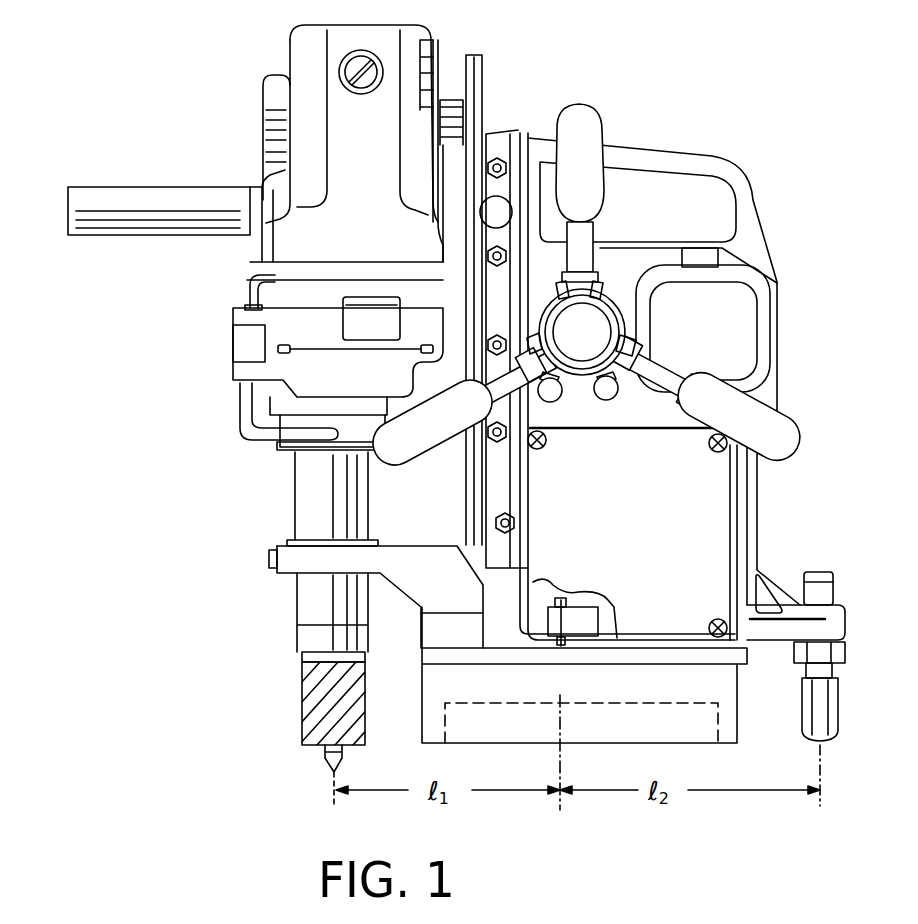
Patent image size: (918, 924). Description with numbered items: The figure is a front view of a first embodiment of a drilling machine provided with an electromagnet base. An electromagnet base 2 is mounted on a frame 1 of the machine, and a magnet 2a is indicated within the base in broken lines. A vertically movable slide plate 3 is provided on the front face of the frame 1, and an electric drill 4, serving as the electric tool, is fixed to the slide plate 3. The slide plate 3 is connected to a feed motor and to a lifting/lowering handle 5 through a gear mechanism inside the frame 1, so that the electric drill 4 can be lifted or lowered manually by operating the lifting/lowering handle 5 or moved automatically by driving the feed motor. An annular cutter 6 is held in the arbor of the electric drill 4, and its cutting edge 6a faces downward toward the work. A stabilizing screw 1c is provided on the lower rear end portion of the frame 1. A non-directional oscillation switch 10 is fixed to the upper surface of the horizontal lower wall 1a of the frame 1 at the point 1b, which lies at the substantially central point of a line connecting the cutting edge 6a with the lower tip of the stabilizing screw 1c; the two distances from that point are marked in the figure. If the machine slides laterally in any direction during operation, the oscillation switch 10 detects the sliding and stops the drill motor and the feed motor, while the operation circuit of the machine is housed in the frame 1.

The frame 1 is at (767, 572).
The horizontal lower wall 1a is at (650, 640).
The point 1b is at (565, 648).
The stabilizing screw 1c is at (822, 708).
The electromagnet base 2 is at (738, 727).
The magnet 2a is at (522, 727).
The slide plate 3 is at (478, 473).
The electric drill 4 is at (288, 242).
The lifting/lowering handle 5 is at (775, 425).
The annular cutter 6 is at (312, 708).
The cutting edge 6a is at (325, 755).
The oscillation switch 10 is at (588, 617).